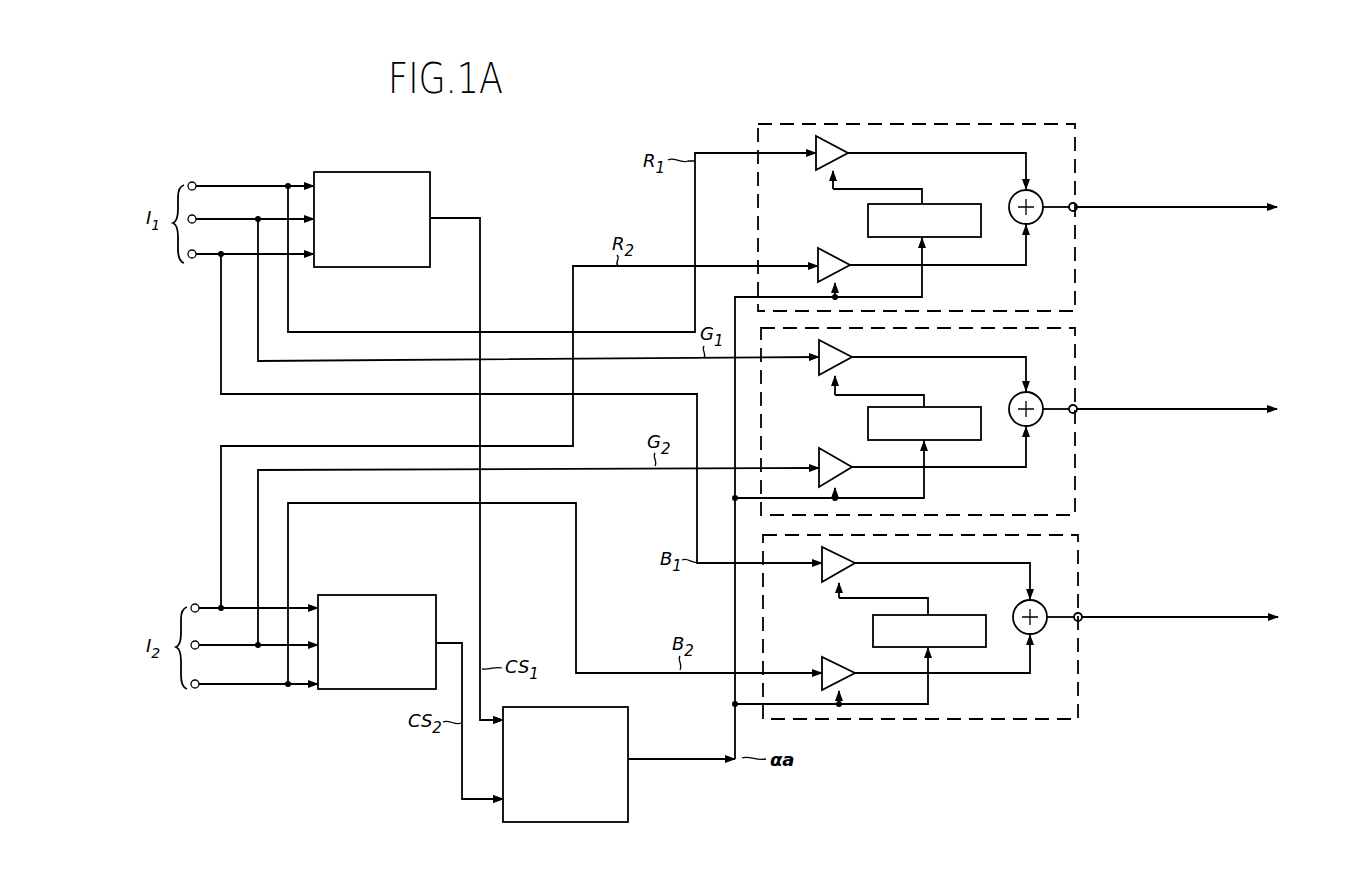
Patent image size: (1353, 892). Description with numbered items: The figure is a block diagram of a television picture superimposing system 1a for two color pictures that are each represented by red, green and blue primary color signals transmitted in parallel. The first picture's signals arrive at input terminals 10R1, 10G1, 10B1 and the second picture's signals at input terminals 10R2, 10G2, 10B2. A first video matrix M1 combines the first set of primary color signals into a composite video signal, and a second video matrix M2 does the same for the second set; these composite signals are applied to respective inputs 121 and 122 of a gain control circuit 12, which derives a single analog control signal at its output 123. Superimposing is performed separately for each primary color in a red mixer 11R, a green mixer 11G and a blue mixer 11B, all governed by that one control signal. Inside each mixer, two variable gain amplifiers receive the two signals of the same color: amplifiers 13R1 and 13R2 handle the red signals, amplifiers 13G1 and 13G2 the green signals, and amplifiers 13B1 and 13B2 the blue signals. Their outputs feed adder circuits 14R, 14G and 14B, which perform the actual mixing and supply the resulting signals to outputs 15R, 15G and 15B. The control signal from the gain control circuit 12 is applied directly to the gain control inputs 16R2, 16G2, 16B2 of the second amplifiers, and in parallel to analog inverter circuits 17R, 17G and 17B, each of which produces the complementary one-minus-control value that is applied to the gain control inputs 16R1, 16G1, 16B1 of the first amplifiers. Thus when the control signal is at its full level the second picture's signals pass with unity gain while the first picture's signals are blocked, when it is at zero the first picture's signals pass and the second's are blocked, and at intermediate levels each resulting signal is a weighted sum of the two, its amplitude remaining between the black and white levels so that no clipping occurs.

The television picture superimposing system 1a is at (1045, 789).
The input terminal 10R1 is at (196, 179).
The input terminal 10G1 is at (196, 218).
The input terminal 10B1 is at (192, 262).
The input terminal 10R2 is at (196, 602).
The input terminal 10G2 is at (194, 645).
The input terminal 10B2 is at (198, 682).
The video matrix M1 is at (368, 172).
The video matrix M2 is at (369, 594).
The mixer 11R is at (1077, 268).
The mixer 11G is at (1077, 474).
The mixer 11B is at (1078, 675).
The gain control circuit 12 is at (630, 707).
The input 121 is at (500, 727).
The input 122 is at (493, 806).
The output 123 is at (633, 766).
The variable gain amplifier 13R1 is at (816, 162).
The variable gain amplifier 13R2 is at (818, 254).
The variable gain amplifier 13G1 is at (819, 366).
The variable gain amplifier 13G2 is at (819, 456).
The variable gain amplifier 13B1 is at (822, 574).
The variable gain amplifier 13B2 is at (822, 664).
The adder circuit 14R is at (1036, 192).
The adder circuit 14G is at (1036, 394).
The adder circuit 14B is at (1039, 601).
The output 15R is at (1075, 212).
The output 15G is at (1075, 414).
The output 15B is at (1080, 622).
The gain control input 16R1 is at (838, 162).
The gain control input 16R2 is at (841, 280).
The gain control input 16G1 is at (838, 364).
The gain control input 16G2 is at (841, 483).
The gain control input 16B1 is at (841, 572).
The gain control input 16B2 is at (844, 688).
The analog inverter circuit 17R is at (957, 204).
The analog inverter circuit 17G is at (952, 407).
The analog inverter circuit 17B is at (958, 615).